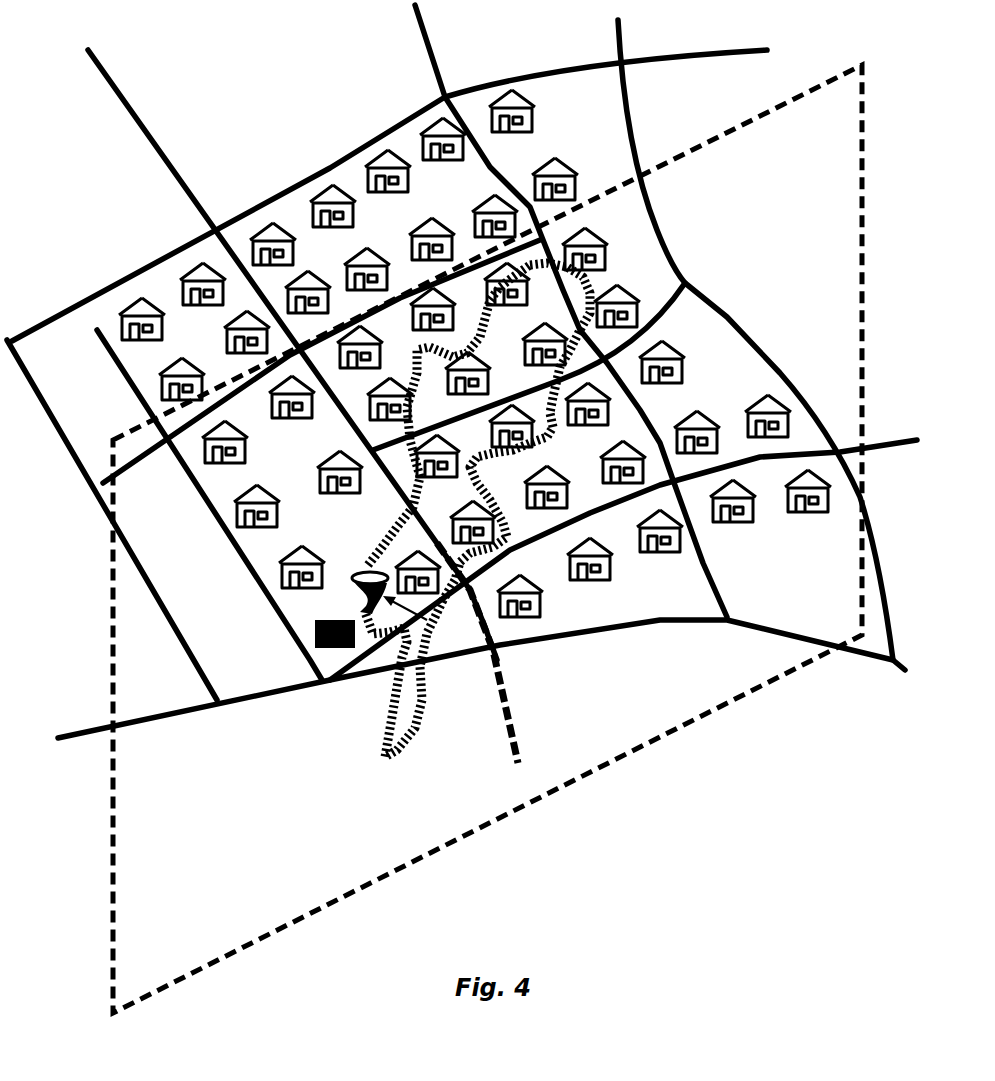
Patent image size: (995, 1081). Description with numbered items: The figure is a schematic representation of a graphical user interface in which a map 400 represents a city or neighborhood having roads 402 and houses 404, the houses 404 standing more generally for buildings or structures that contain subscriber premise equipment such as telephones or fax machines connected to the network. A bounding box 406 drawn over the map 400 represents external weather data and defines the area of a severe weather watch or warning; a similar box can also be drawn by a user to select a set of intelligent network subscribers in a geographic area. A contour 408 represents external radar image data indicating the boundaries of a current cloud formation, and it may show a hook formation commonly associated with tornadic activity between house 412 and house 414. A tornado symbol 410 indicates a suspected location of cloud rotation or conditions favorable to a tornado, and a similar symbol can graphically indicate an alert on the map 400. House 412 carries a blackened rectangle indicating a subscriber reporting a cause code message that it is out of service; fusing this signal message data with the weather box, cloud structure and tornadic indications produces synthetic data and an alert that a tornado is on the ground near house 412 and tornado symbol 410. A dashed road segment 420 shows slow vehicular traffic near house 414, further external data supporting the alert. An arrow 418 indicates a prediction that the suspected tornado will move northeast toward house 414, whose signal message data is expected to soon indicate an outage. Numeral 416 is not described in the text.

The map 400 is at (176, 60).
The roads 402 is at (180, 168).
The houses 404 is at (488, 95).
The bounding box 406 is at (865, 160).
The contour 408 is at (393, 713).
The tornado symbol 410 is at (362, 570).
The house 412 is at (314, 630).
The house 414 is at (408, 548).
The projected path 416 is at (466, 506).
The arrow 418 is at (427, 620).
The dashed road segment 420 is at (520, 722).